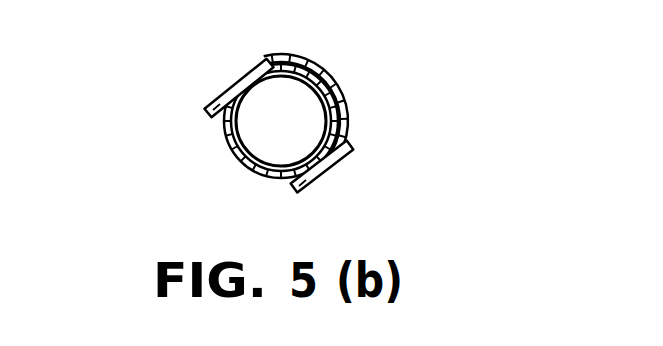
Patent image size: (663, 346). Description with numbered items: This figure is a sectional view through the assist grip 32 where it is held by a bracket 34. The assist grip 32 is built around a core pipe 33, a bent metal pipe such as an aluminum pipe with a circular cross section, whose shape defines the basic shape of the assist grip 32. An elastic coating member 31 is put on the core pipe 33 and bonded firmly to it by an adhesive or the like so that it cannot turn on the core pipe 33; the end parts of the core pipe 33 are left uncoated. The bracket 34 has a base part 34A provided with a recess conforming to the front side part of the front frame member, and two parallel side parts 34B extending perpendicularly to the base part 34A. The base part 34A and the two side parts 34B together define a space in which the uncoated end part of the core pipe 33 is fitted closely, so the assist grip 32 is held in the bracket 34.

The elastic coating member 31 is at (234, 149).
The assist grip 32 is at (197, 146).
The core pipe 33 is at (248, 171).
The bracket 34 is at (323, 126).
The base part 34A is at (316, 72).
The side parts 34B is at (240, 87).